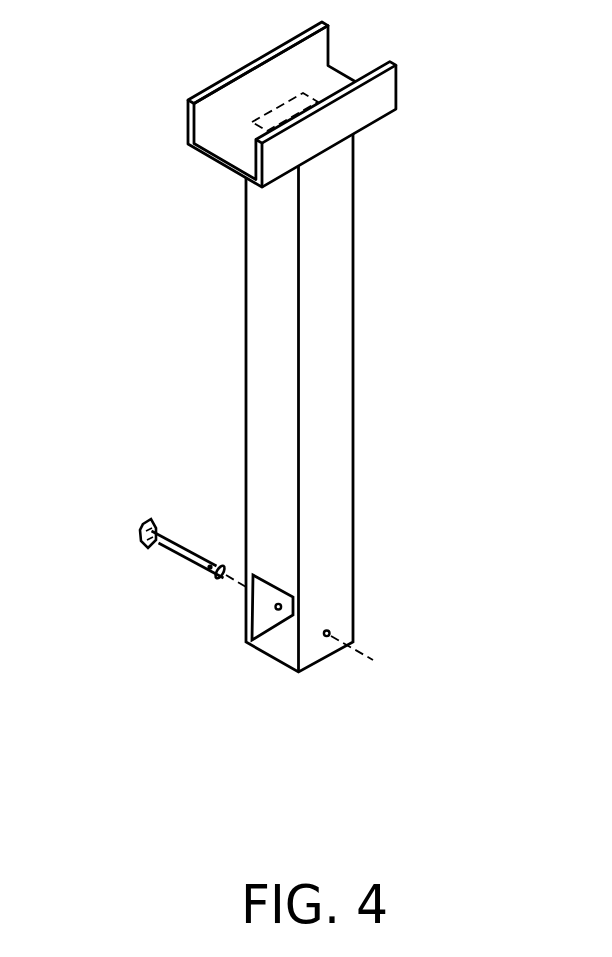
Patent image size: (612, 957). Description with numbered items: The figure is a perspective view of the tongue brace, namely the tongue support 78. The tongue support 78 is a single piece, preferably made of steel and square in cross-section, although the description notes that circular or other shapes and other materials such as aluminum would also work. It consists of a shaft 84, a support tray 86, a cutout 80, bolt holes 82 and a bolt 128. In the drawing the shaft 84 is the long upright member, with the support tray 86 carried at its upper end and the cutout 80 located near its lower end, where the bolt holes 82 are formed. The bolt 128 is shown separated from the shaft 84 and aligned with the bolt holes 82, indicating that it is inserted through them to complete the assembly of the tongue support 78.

The tongue support 78 is at (190, 355).
The support tray 86 is at (212, 157).
The shaft 84 is at (353, 387).
The cutout 80 is at (270, 687).
The bolt holes 82 is at (279, 611).
The bolt 128 is at (152, 525).